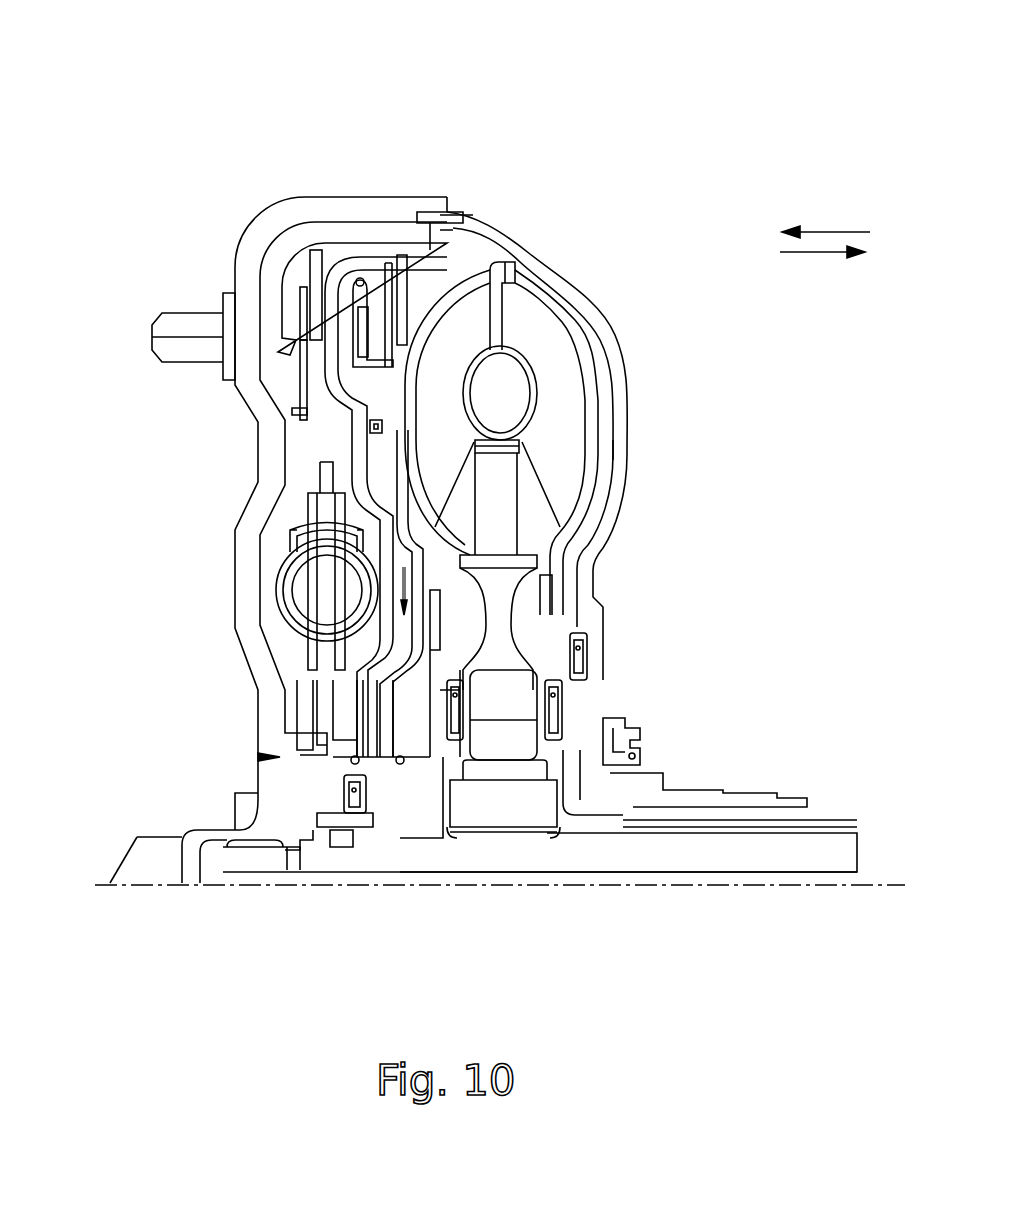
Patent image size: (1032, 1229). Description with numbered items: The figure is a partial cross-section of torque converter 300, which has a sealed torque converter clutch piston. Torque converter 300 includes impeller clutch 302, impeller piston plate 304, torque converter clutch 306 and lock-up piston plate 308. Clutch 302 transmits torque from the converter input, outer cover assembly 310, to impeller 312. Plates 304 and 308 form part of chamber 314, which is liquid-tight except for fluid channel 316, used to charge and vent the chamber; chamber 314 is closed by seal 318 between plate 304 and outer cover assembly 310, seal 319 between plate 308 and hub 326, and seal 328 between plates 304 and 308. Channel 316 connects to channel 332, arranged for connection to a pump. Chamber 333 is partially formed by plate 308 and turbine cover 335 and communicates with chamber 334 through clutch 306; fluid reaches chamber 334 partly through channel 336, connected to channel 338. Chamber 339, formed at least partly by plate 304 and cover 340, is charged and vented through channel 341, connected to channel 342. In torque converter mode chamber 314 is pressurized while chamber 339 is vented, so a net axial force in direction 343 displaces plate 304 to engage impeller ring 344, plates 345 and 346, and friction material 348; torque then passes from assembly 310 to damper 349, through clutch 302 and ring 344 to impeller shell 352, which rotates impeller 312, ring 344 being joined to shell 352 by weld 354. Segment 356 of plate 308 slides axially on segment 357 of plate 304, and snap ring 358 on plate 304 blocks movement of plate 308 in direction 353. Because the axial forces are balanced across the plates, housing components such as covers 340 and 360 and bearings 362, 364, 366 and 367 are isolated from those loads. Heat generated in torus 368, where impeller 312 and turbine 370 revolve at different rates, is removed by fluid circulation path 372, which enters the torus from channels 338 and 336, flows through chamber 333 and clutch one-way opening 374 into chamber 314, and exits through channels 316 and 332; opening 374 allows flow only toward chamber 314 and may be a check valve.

The torque converter 300 is at (630, 97).
The impeller clutch 302 is at (235, 222).
The impeller piston plate 304 is at (325, 393).
The torque converter clutch 306 is at (500, 260).
The lock-up piston plate 308 is at (390, 507).
The outer cover assembly 310 is at (253, 818).
The impeller 312 is at (540, 320).
The chamber 314 is at (280, 668).
The fluid channel 316 is at (377, 790).
The seal 318 is at (353, 763).
The seal 319 is at (400, 765).
The hub 326 is at (422, 813).
The seal 328 is at (356, 280).
The channel 332 is at (210, 875).
The chamber 333 is at (540, 553).
The chamber 334 is at (600, 240).
The turbine cover 335 is at (440, 485).
The channel 336 is at (450, 798).
The channel 338 is at (810, 833).
The chamber 339 is at (260, 560).
The cover 340 is at (255, 463).
The channel 341 is at (610, 707).
The channel 342 is at (810, 810).
The direction 343 is at (833, 228).
The impeller ring 344 is at (253, 310).
The plate 345 is at (257, 247).
The plate 346 is at (275, 380).
The friction material 348 is at (300, 305).
The damper 349 is at (275, 600).
The impeller shell 352 is at (588, 343).
The direction 353 is at (808, 257).
The weld 354 is at (447, 200).
The segment 356 is at (387, 263).
The segment 357 is at (453, 213).
The snap ring 358 is at (455, 243).
The cover 360 is at (617, 462).
The bearing 362 is at (357, 795).
The bearing 364 is at (465, 717).
The bearing 366 is at (557, 727).
The bearing 367 is at (587, 647).
The torus 368 is at (510, 417).
The turbine 370 is at (450, 400).
The fluid circulation path 372 is at (460, 268).
The clutch one-way opening 374 is at (445, 455).